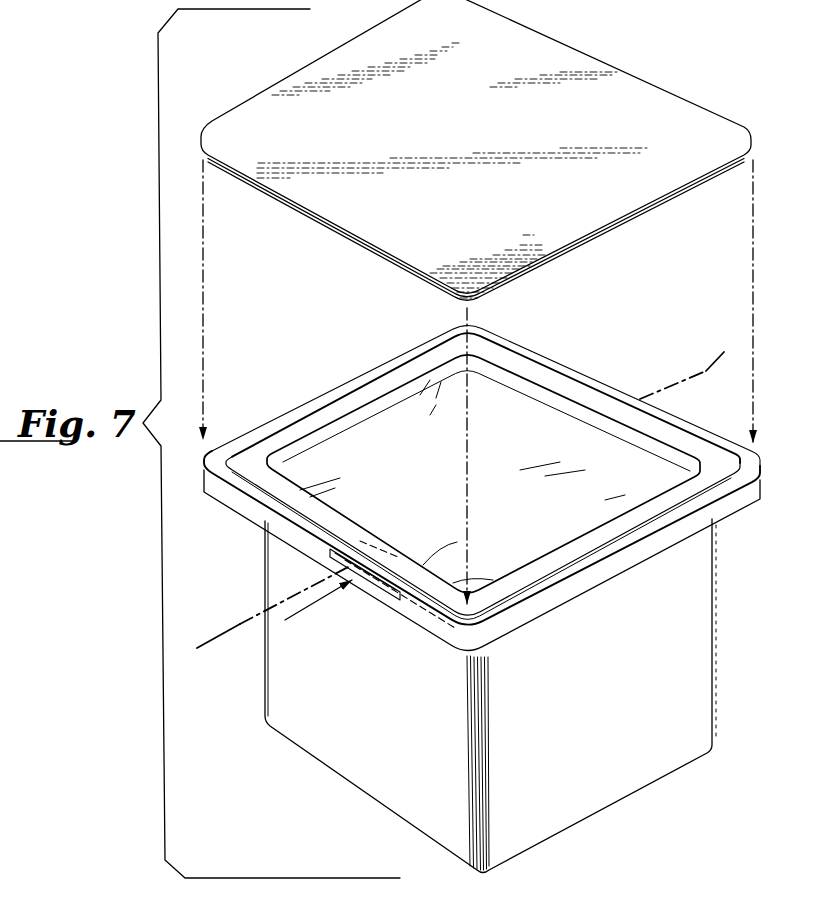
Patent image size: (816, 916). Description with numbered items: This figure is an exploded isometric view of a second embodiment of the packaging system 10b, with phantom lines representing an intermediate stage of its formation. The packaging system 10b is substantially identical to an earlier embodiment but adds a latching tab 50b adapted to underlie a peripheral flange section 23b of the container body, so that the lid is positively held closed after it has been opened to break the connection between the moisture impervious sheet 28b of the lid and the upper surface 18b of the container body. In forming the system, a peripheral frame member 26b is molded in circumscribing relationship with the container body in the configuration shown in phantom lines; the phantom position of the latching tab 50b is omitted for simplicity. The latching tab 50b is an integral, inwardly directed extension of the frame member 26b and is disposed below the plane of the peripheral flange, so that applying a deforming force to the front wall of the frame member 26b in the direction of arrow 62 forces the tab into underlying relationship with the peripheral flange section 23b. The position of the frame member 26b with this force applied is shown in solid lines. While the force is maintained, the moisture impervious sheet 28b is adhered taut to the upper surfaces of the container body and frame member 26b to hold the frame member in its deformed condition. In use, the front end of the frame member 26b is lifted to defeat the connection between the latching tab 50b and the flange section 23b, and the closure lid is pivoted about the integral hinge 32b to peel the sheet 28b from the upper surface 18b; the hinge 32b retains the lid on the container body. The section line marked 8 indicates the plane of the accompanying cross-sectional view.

The packaging system 10b is at (246, 76).
The moisture impervious sheet 28b is at (371, 216).
The hinge 32b is at (577, 372).
The upper surface 18b is at (288, 494).
The peripheral frame member 26b is at (267, 527).
The latching tab 50b is at (387, 577).
The arrow 62 is at (309, 606).
The peripheral flange section 23b is at (692, 518).
The section line 8- 8 is at (237, 645).